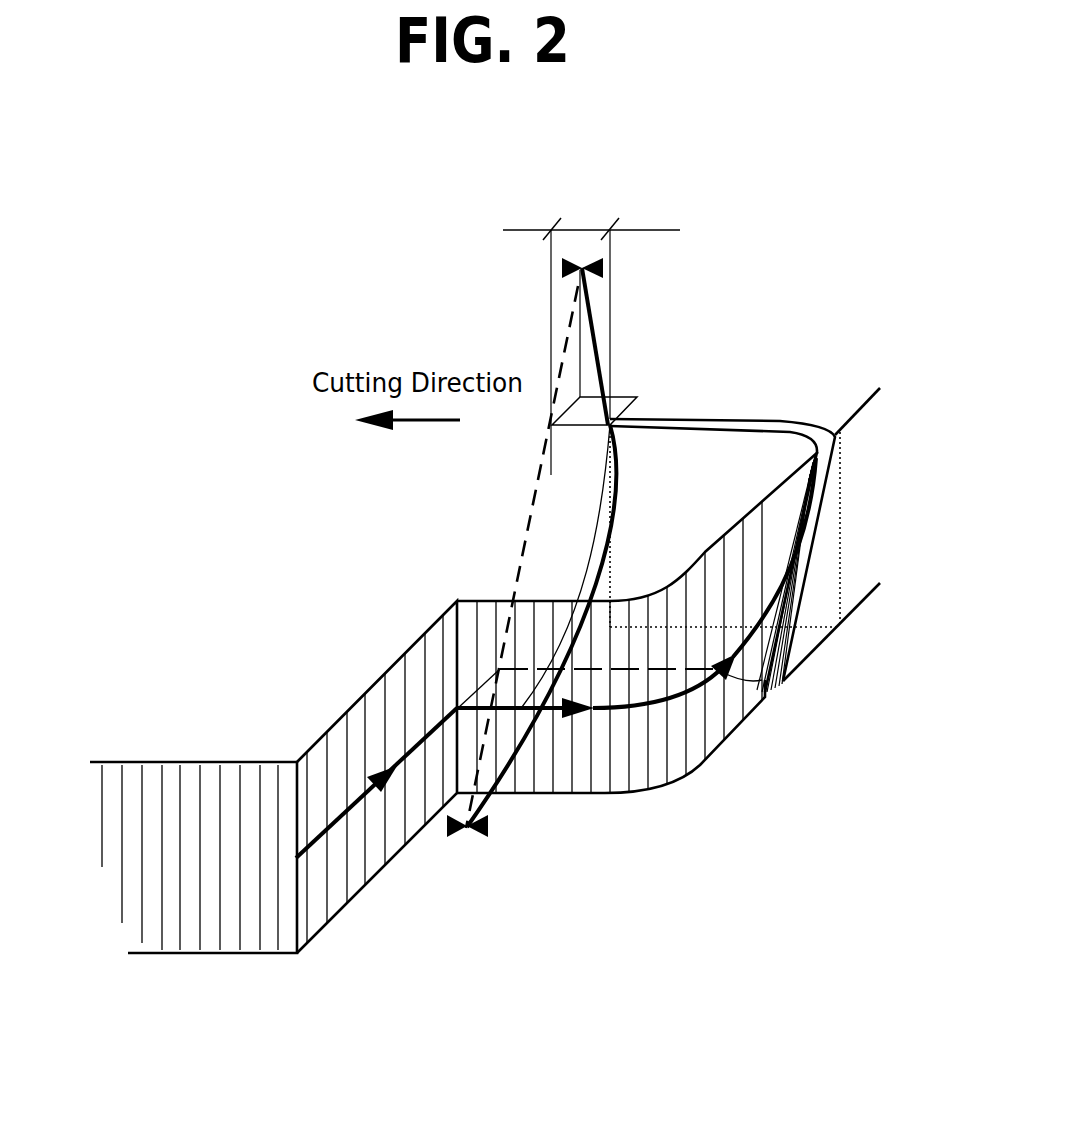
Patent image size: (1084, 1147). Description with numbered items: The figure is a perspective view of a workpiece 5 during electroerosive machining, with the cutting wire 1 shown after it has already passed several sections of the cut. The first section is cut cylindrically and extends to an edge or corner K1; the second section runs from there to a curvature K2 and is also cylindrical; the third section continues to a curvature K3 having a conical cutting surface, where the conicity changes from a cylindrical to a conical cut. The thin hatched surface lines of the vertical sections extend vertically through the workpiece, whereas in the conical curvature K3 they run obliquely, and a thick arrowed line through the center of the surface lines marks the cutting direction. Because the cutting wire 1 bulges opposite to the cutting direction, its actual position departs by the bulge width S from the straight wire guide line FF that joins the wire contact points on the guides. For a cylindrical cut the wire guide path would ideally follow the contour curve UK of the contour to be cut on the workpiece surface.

The cutting wire 1 is at (597, 357).
The workpiece 5 is at (242, 700).
The width of the bulge S is at (591, 334).
The straight wire guide line FF is at (568, 325).
The edge or corner K1 is at (453, 584).
The curvature K2 is at (660, 572).
The curvature with conical cutting surface K3 is at (840, 482).
The contour curve UK is at (675, 782).